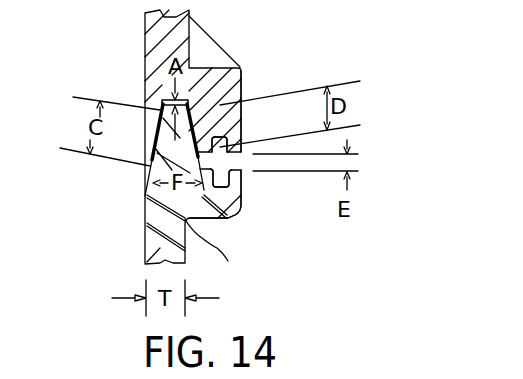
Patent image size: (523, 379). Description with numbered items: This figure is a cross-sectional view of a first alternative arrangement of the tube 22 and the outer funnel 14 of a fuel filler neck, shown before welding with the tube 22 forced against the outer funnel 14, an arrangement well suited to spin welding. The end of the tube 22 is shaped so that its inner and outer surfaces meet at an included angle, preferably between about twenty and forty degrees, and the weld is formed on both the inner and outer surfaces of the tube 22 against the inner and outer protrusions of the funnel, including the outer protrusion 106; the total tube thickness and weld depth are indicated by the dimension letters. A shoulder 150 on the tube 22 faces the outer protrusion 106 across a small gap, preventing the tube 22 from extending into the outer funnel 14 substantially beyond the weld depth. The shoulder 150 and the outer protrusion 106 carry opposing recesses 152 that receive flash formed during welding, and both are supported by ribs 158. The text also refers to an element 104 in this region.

The outer funnel 14 is at (145, 30).
The tube 22 is at (145, 234).
The thread surface 104 is at (143, 145).
The outer protrusion 106 is at (233, 86).
The shoulder 150 is at (237, 210).
The opposing recesses 152 is at (230, 100).
The ribs 158 is at (213, 48).